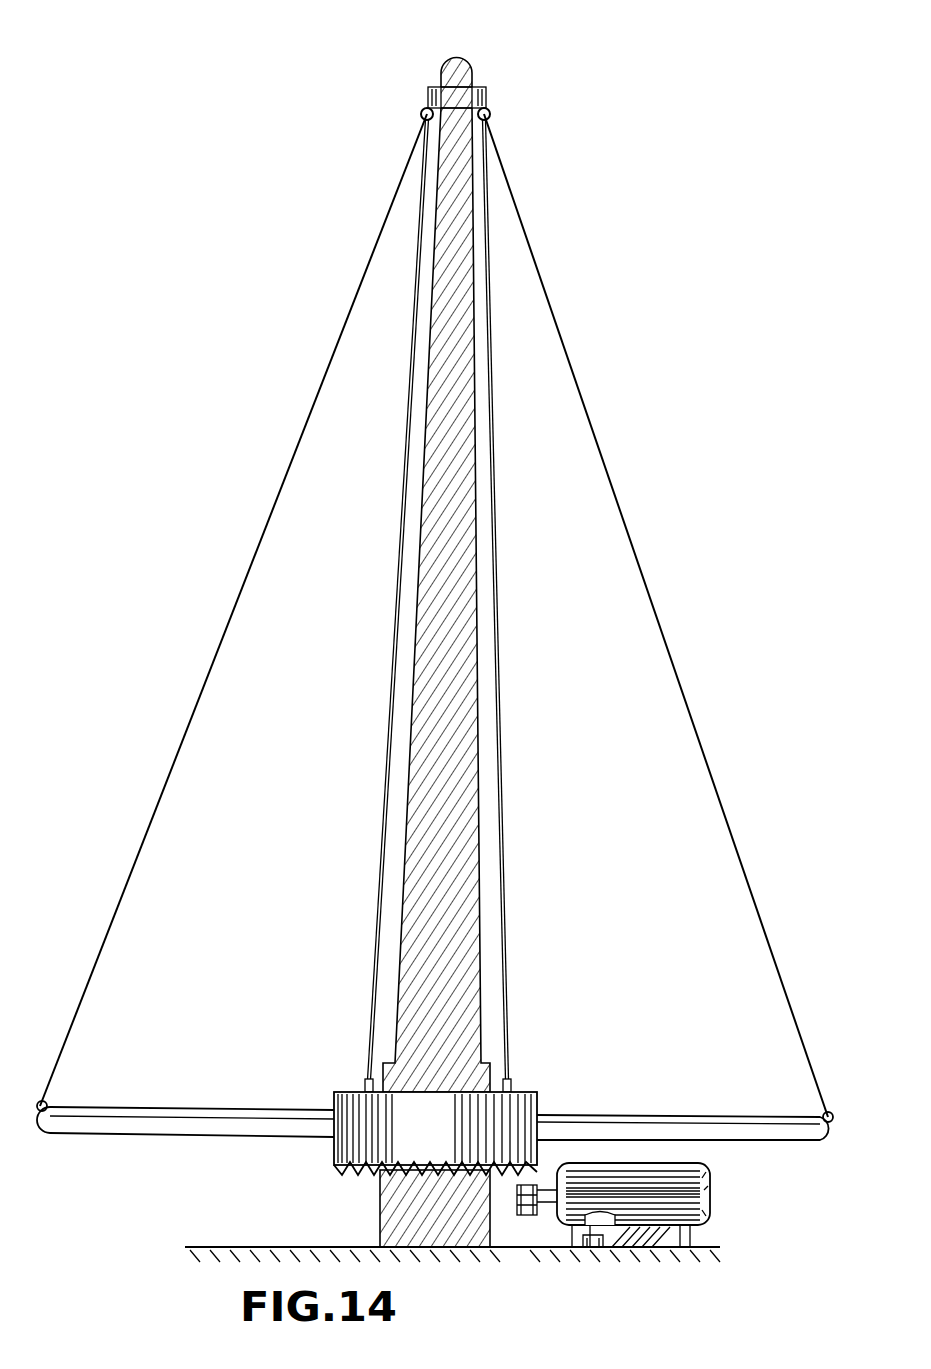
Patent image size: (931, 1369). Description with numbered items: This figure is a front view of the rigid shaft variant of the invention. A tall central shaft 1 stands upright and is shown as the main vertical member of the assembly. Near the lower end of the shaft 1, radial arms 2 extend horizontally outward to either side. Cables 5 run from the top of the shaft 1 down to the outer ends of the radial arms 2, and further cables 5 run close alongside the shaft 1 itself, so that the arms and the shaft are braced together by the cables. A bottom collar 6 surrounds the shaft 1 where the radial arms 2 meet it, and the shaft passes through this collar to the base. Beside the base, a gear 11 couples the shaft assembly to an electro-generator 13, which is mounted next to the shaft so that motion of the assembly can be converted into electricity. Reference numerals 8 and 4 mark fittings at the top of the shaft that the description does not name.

The shaft 1 is at (450, 66).
The mast head cap 8 is at (428, 90).
The guy wire attachment rings 4 is at (490, 113).
The cables 5 is at (616, 493).
The radial arms 2 is at (662, 1124).
The bottom collar 6 is at (337, 1164).
The electro-generator 13 is at (712, 1207).
The gear 11 is at (524, 1222).